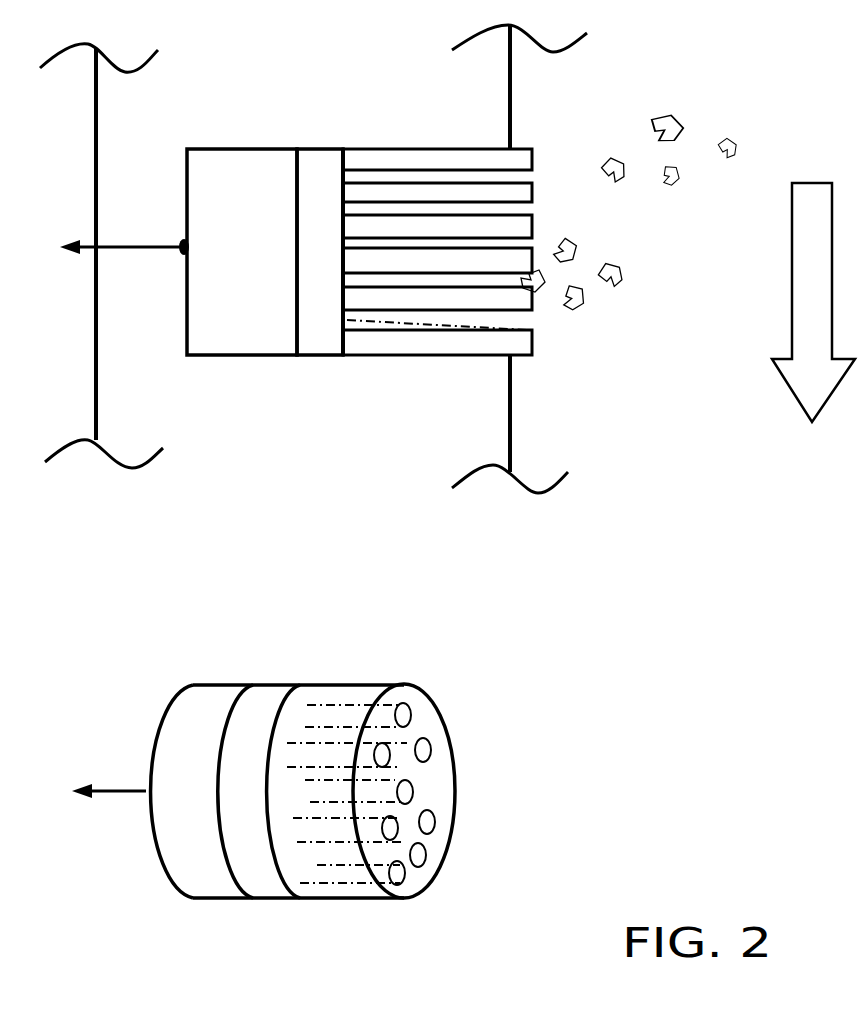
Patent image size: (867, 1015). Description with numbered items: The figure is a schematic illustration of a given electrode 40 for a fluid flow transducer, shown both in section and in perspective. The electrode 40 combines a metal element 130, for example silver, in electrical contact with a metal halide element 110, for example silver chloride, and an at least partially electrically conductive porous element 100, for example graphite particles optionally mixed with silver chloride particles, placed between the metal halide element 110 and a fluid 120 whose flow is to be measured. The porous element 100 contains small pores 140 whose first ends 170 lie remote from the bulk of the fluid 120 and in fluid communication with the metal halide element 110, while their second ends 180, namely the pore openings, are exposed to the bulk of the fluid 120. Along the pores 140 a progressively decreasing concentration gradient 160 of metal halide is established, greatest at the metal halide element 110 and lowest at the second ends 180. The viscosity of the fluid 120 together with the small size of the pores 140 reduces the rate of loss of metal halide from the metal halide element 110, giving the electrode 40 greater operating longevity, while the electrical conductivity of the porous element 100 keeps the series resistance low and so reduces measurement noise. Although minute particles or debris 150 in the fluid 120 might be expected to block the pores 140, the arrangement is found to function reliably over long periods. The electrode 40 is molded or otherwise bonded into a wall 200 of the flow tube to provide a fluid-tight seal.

The electrode 40 is at (358, 517).
The porous element 100 is at (439, 483).
The metal halide element 110 is at (320, 167).
The fluid 120 is at (668, 241).
The metal element 130 is at (208, 261).
The pores 140 is at (438, 285).
The particles or debris 150 is at (668, 120).
The concentration gradient 160 is at (403, 323).
The first ends 170 is at (343, 323).
The second ends 180 is at (532, 325).
The wall 200 is at (379, 105).